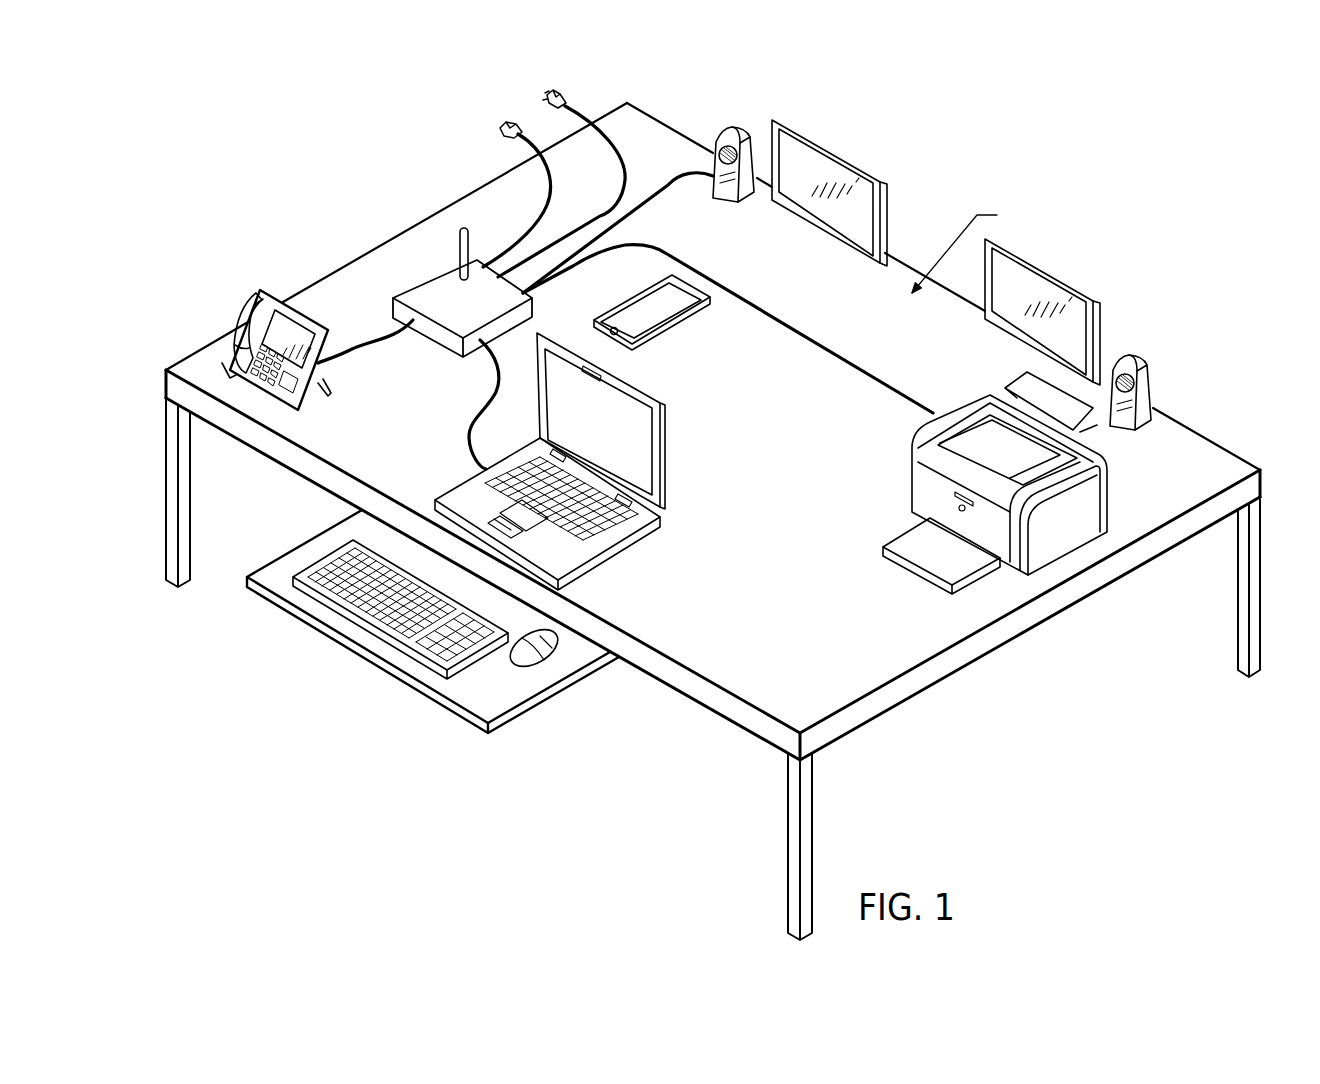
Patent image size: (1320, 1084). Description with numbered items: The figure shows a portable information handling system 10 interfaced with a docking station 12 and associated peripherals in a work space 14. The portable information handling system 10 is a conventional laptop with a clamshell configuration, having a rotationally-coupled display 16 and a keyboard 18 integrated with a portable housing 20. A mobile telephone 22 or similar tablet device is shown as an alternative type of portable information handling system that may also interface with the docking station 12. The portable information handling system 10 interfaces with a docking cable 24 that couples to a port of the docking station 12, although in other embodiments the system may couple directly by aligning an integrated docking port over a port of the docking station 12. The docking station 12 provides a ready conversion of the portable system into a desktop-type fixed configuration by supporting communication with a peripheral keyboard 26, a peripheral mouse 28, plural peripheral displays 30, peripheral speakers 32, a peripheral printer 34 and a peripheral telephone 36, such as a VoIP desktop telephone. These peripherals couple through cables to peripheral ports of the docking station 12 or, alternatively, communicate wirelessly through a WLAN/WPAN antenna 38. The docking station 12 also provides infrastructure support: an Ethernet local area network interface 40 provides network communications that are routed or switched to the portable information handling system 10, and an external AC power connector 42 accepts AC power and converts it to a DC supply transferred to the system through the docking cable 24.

The portable information handling system 10 is at (585, 592).
The docking station 12 is at (390, 240).
The work space 14 is at (1055, 156).
The display 16 is at (630, 415).
The keyboard 18 is at (523, 460).
The portable housing 20 is at (637, 533).
The mobile telephone 22 is at (697, 308).
The docking cable 24 is at (472, 405).
The peripheral keyboard 26 is at (337, 607).
The peripheral mouse 28 is at (548, 660).
The peripheral displays 30 is at (1128, 312).
The peripheral speakers 32 is at (1185, 386).
The peripheral printer 34 is at (1073, 538).
The peripheral telephone 36 is at (237, 315).
The WLAN/WPAN antenna 38 is at (424, 292).
The Ethernet local area network (LAN) interface 40 is at (502, 126).
The external AC power connector 42 is at (562, 94).